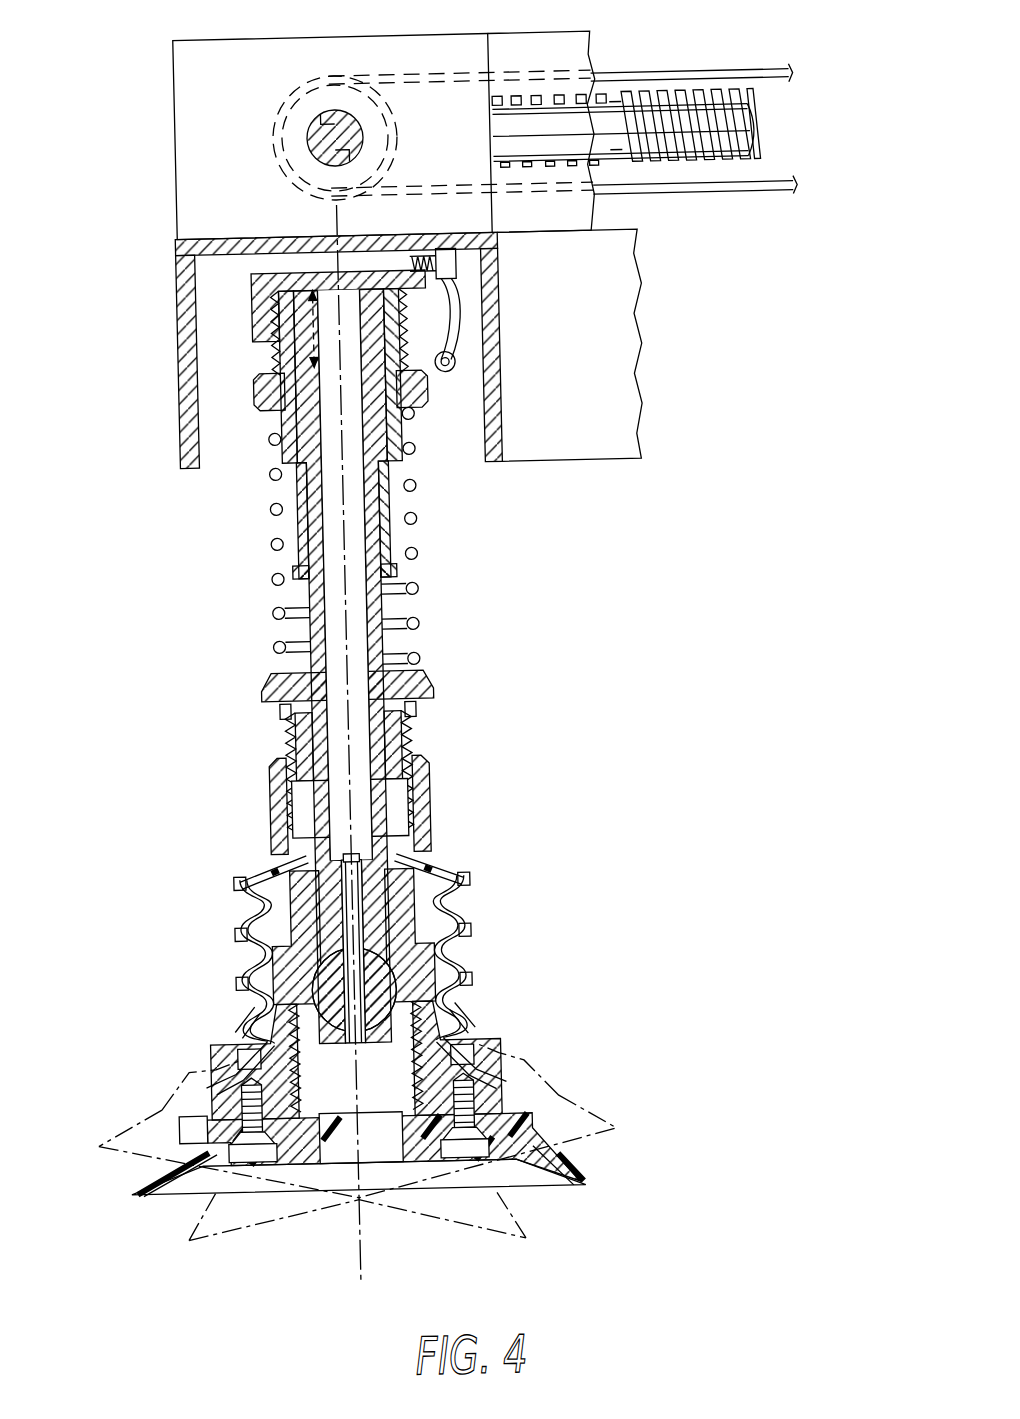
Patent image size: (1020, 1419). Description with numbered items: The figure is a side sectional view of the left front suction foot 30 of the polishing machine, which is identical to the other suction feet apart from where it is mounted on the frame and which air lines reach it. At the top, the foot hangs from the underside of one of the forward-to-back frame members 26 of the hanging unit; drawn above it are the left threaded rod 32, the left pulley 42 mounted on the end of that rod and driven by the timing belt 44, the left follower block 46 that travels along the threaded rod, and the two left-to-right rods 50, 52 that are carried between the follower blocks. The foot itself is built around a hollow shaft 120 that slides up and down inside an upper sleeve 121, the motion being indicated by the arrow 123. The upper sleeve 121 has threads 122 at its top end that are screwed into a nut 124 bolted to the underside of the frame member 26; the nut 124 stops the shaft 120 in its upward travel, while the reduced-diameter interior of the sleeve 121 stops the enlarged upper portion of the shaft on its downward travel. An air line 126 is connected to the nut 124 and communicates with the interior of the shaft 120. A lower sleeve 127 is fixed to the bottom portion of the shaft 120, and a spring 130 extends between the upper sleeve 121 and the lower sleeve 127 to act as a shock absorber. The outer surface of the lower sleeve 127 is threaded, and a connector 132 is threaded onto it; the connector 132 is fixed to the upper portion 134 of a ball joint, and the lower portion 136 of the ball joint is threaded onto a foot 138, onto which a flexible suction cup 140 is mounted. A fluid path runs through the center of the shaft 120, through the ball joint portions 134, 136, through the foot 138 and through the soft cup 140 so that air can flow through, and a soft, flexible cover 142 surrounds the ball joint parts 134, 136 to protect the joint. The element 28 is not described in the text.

The forward-to-back frame member 26 is at (175, 360).
The support plate 28 is at (595, 466).
The suction foot 30 is at (218, 552).
The left threaded rod 32 is at (350, 130).
The left pulley 42 is at (290, 95).
The timing belt 44 is at (403, 75).
The left follower block 46 is at (175, 125).
The rear left-to-right rod 50 is at (748, 127).
The left-to-right rod 52 is at (605, 170).
The hollow shaft 120 is at (385, 503).
The upper sleeve 121 is at (250, 390).
The threads 122 is at (275, 308).
The arrow 123 is at (313, 333).
The nut 124 is at (250, 292).
The air line 126 is at (452, 312).
The lower sleeve 127 is at (412, 690).
The spring 130 is at (262, 612).
The connector 132 is at (405, 878).
The upper portion of ball joint 134 is at (380, 946).
The lower portion of ball joint 136 is at (428, 972).
The foot 138 is at (470, 1048).
The flexible suction cup 140 is at (540, 1178).
The flexible cover 142 is at (225, 870).